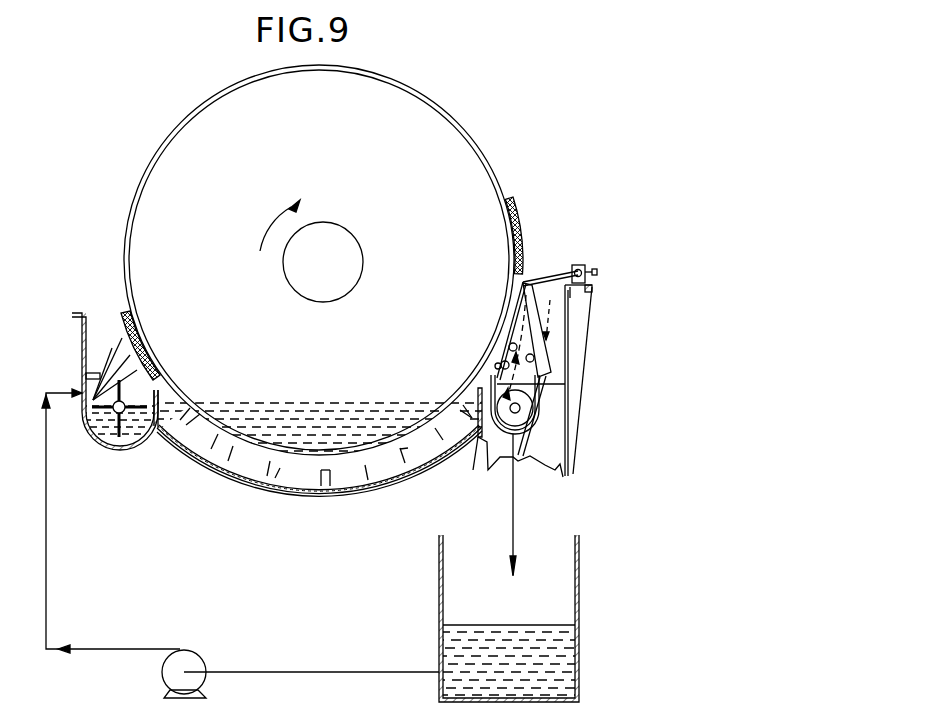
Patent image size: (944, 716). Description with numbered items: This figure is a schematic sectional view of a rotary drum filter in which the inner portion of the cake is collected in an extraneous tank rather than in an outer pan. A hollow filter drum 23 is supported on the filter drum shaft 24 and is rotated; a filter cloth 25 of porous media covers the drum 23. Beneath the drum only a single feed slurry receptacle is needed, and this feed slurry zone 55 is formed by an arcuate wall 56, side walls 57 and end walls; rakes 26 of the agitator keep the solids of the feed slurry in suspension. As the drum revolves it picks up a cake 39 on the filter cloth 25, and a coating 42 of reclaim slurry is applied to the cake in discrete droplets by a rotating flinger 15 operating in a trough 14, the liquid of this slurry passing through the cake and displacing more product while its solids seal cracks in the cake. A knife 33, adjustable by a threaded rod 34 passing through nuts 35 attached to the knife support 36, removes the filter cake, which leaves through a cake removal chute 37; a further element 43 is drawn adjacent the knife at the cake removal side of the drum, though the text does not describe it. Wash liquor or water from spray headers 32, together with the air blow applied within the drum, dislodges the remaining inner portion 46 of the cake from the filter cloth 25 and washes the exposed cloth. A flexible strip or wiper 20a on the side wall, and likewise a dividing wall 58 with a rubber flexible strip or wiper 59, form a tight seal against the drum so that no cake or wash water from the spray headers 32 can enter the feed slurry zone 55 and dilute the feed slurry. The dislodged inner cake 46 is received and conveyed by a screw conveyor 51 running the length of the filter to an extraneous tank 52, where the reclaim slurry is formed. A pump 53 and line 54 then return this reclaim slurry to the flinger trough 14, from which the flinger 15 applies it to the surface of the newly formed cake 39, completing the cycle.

The filter drum 23 is at (136, 245).
The filter cloth 25 is at (129, 278).
The filter drum shaft 24 is at (324, 302).
The coating of reclaim slurry 42 is at (122, 330).
The cake 39 is at (137, 341).
The flinger 15 is at (100, 423).
The trough 14 is at (120, 447).
The side walls 57 is at (157, 440).
The rakes 26 is at (270, 468).
The feed slurry zone 55 is at (360, 486).
The arcuate wall 56 is at (395, 482).
The cleaning pad 43 is at (527, 250).
The inner portion of the cake 46 is at (522, 282).
The nuts 35 is at (577, 268).
The threaded rod 34 is at (590, 270).
The knife 33 is at (537, 296).
The knife support 36 is at (575, 338).
The cake removal chute 37 is at (568, 406).
The spray headers 32 is at (509, 345).
The flexible strip or wiper 20a is at (500, 352).
The flexible strip or wiper 59 is at (501, 365).
The dividing wall 58 is at (493, 383).
The screw conveyor 51 is at (530, 419).
The extraneous tank 52 is at (579, 588).
The pump 53 is at (195, 664).
The line 54 is at (303, 671).